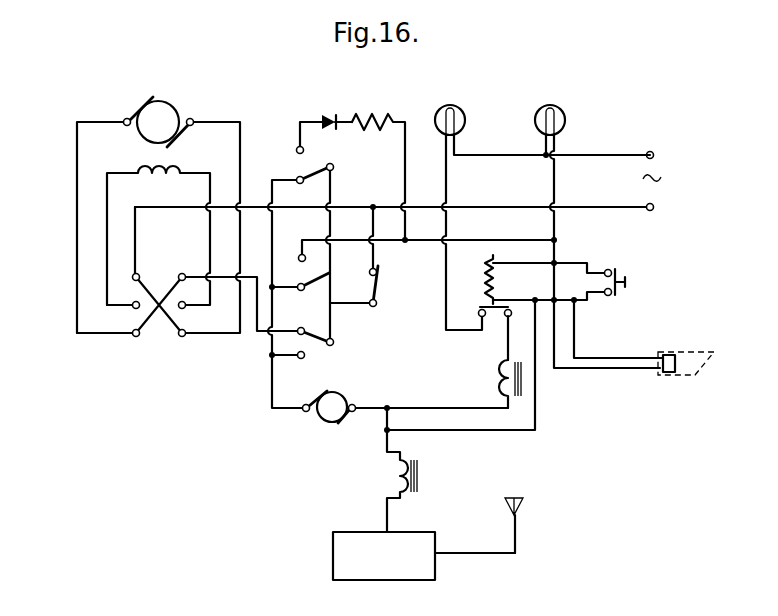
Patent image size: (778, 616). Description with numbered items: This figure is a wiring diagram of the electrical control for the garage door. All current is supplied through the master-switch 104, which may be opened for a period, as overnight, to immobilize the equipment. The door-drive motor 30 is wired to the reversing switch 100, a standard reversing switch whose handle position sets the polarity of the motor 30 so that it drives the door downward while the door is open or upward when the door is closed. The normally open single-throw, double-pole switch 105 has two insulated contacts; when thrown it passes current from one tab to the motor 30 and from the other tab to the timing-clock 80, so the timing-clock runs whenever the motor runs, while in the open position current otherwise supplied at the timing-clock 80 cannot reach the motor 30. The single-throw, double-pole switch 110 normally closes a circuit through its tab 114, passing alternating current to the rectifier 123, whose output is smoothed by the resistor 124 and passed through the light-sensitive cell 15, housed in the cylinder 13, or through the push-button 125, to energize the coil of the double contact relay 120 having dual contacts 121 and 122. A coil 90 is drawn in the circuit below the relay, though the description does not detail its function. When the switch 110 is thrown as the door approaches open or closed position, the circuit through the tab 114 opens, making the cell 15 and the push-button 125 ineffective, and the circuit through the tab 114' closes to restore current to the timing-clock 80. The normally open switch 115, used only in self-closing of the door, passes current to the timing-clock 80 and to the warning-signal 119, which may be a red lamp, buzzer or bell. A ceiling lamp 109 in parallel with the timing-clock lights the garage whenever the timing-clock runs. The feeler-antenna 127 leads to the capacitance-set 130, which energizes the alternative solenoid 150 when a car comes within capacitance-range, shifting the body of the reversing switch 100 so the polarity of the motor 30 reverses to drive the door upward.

The door-drive motor 30 is at (174, 113).
The reversing switch 100 is at (145, 358).
The tab 114 is at (293, 138).
The tab 114' is at (292, 281).
The single-throw double-pole switch 110 is at (318, 168).
The rectifier 123 is at (329, 115).
The resistor 124 is at (384, 102).
The ceiling lamp 109 is at (450, 104).
The warning-signal 119 is at (550, 104).
The single-throw double-pole switch 115 is at (307, 321).
The master-switch 104 is at (380, 288).
The single-throw double-pole switch 105 is at (318, 350).
The timing-clock 80 is at (340, 398).
The double contact relay 120 is at (490, 282).
The relay contact 121 is at (478, 314).
The relay contact 122 is at (506, 319).
The coil 90 is at (504, 377).
The push-button 125 is at (619, 276).
The light-sensitive cell 15 is at (668, 356).
The cylinder 13 is at (702, 352).
The alternative solenoid 150 is at (394, 470).
The feeler-antenna 127 is at (521, 497).
The capacitance-set 130 is at (401, 569).